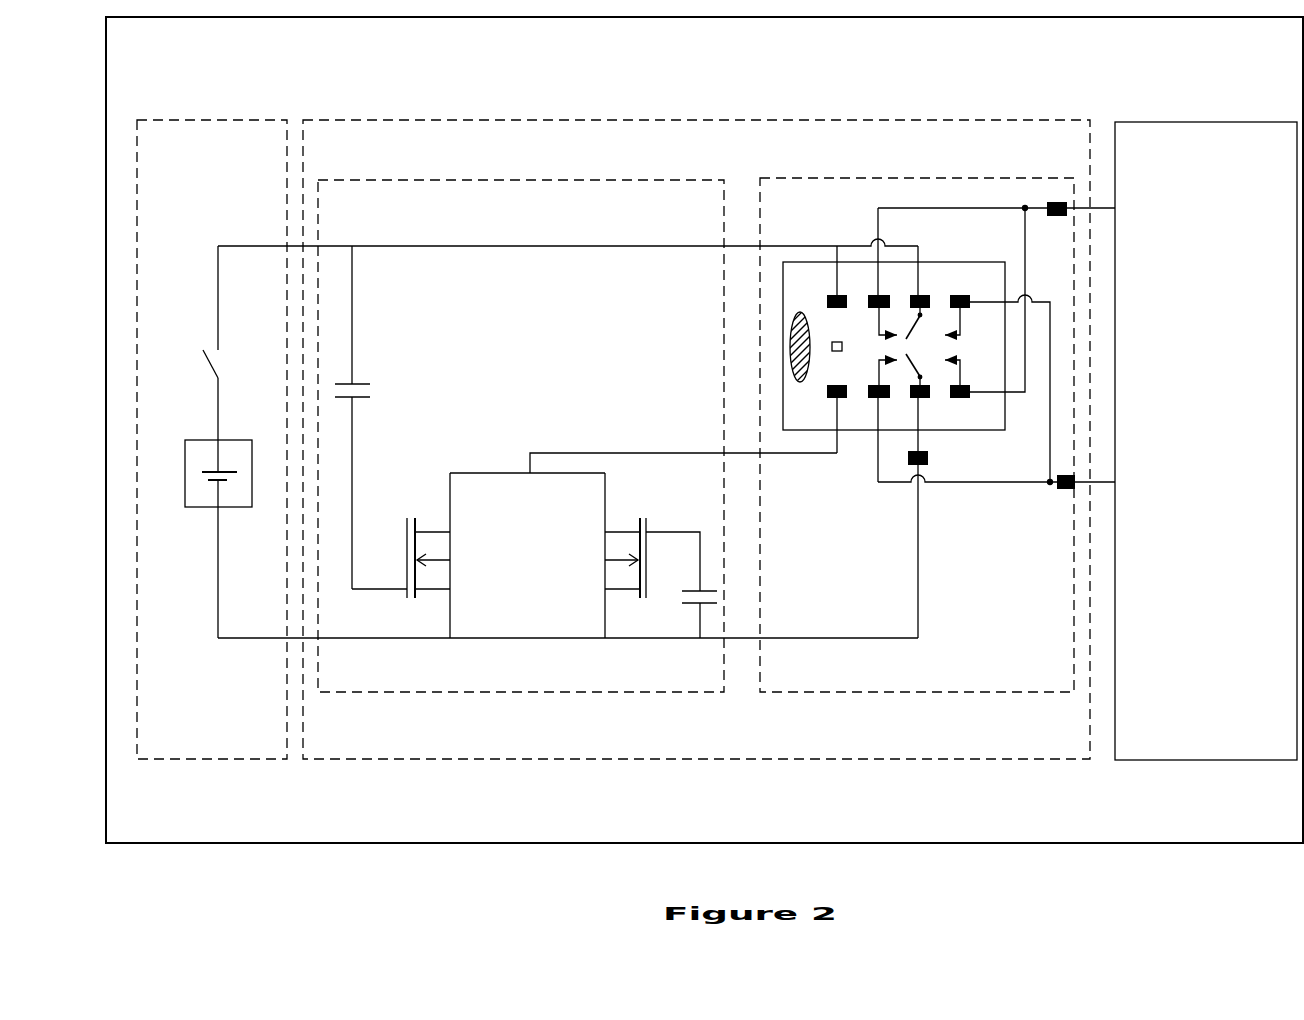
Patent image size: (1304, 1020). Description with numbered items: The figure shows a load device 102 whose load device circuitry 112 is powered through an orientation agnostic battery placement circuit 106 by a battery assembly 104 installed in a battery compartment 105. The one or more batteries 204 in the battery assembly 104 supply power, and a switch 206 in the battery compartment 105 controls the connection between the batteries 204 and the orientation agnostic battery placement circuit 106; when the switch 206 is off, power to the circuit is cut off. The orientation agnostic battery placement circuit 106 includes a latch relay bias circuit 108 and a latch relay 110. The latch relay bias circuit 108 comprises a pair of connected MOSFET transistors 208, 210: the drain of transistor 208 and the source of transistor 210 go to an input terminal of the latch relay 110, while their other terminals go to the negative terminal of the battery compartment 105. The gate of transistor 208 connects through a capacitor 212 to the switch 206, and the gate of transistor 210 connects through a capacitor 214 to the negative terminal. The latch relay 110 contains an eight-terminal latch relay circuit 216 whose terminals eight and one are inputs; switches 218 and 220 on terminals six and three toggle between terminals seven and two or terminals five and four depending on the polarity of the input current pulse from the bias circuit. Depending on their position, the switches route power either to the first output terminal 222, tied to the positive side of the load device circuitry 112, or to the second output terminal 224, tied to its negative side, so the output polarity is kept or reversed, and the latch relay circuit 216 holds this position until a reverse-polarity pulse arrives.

The load device 102 is at (787, 49).
The battery assembly 104 is at (205, 508).
The battery compartment 105 is at (285, 811).
The orientation agnostic battery placement circuit 106 is at (860, 784).
The latch relay bias circuit 108 is at (633, 722).
The latch relay 110 is at (983, 722).
The load device circuitry 112 is at (1222, 477).
The batteries 204 is at (203, 463).
The switch 206 is at (197, 338).
The transistor 208 is at (428, 602).
The transistor 210 is at (587, 575).
The capacitor 212 is at (366, 408).
The capacitor 214 is at (685, 612).
The latch relay circuit 216 is at (783, 347).
The switch 218 is at (910, 321).
The switch 220 is at (910, 373).
The first output terminal 222 is at (1057, 200).
The second output terminal 224 is at (1065, 491).